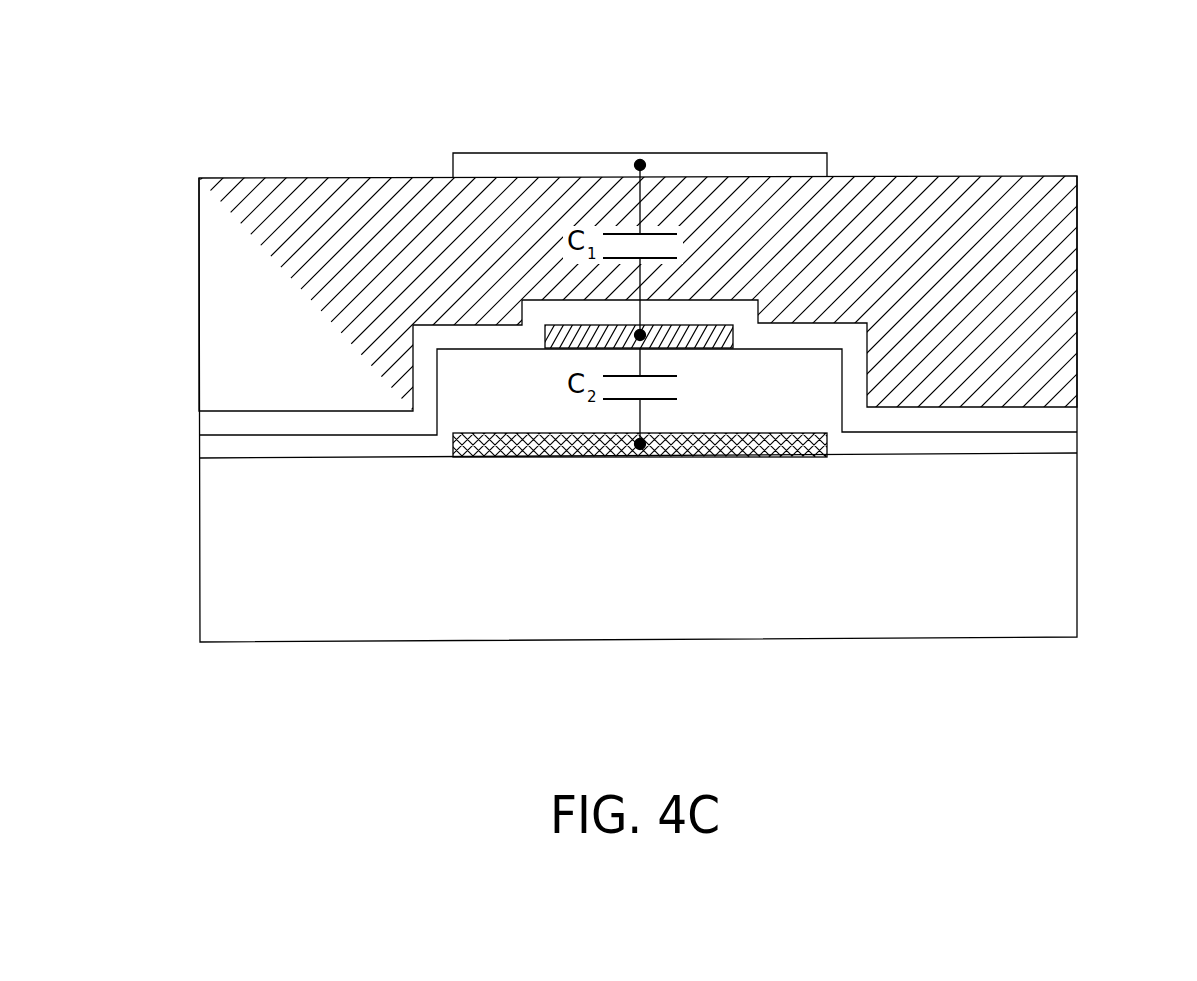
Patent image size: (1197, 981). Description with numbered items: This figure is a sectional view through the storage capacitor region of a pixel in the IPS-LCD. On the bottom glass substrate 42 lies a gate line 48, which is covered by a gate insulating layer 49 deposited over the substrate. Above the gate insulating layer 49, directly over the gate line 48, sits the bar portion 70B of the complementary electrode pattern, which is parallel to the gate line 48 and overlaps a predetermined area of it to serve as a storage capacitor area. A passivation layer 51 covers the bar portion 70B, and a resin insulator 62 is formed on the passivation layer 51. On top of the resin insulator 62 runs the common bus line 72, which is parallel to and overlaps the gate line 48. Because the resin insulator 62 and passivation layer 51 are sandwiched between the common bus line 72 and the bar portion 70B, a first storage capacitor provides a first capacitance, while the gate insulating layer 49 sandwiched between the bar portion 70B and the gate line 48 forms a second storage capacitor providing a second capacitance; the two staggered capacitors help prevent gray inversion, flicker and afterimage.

The bottom glass substrate 42 is at (1048, 535).
The gate line 48 is at (697, 458).
The gate insulating layer 49 is at (1048, 448).
The passivation layer 51 is at (1048, 421).
The resin insulator 62 is at (1048, 277).
The bar portion 70B is at (688, 325).
The common bus line 72 is at (512, 167).